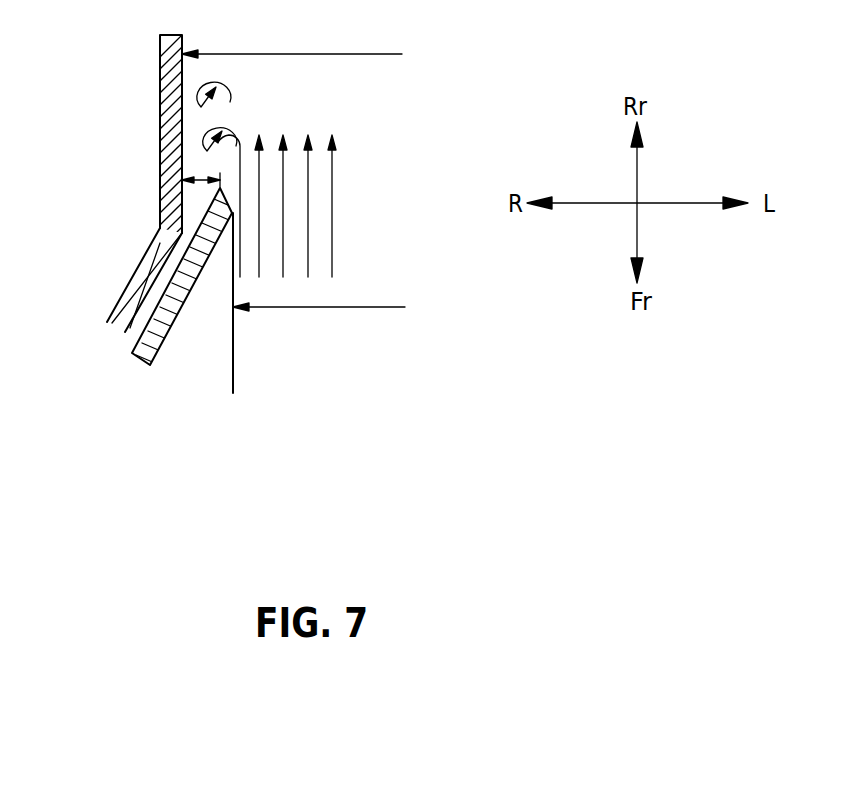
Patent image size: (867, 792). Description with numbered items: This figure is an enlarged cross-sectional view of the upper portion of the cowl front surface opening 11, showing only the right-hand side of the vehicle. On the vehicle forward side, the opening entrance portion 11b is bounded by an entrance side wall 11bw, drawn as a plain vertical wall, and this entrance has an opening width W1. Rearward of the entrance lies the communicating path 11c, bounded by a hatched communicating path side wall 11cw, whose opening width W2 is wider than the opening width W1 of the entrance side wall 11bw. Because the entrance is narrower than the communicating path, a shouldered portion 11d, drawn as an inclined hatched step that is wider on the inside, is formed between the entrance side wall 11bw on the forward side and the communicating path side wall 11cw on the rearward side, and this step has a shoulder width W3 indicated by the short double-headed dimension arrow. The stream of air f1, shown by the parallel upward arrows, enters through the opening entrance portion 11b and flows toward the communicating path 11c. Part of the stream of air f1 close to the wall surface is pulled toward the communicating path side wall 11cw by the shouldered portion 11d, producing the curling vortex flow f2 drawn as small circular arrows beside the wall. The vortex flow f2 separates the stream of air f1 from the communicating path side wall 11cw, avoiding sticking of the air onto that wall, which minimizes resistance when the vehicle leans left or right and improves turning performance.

The cowl front surface opening 11 is at (239, 249).
The opening entrance portion 11b is at (305, 350).
The entrance side wall 11bw is at (233, 358).
The communicating path 11c is at (238, 84).
The communicating path side wall 11cw is at (183, 76).
The shouldered portion 11d is at (215, 170).
The stream of air f1 is at (333, 213).
The vortex flow f2 is at (203, 145).
The opening width W1 is at (319, 298).
The opening width W2 is at (292, 42).
The shoulder width W3 is at (200, 183).